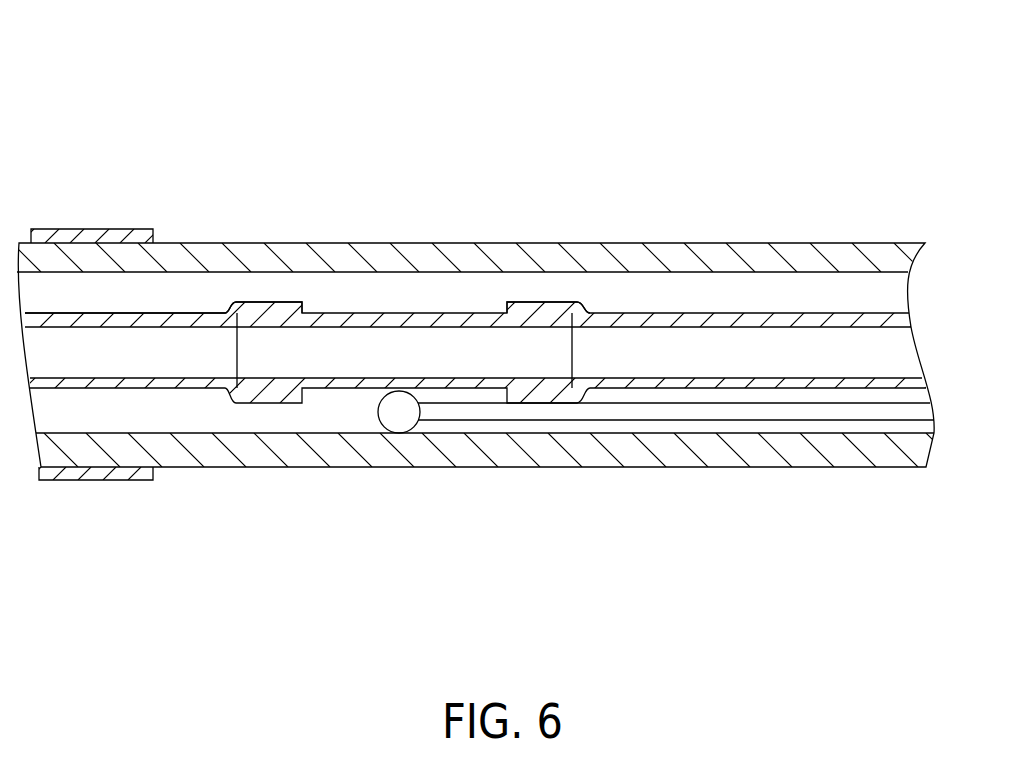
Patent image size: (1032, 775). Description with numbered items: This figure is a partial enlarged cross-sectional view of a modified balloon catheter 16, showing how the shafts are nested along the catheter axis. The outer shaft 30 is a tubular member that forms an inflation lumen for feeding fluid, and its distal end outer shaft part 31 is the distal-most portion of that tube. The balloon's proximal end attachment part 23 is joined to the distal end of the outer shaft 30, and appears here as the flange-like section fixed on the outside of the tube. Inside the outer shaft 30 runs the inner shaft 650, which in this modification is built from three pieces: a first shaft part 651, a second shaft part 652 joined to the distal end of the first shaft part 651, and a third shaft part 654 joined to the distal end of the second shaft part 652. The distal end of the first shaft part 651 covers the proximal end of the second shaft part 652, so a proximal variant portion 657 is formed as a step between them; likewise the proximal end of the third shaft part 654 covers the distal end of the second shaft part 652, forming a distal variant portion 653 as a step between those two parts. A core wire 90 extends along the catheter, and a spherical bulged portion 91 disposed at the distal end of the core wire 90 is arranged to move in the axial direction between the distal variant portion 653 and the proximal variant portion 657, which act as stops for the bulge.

The balloon catheter 16 is at (618, 115).
The proximal end attachment part 23 is at (115, 240).
The outer shaft 30 is at (837, 243).
The distal end outer shaft part 31 is at (853, 465).
The core wire 90 is at (692, 415).
The bulged portion 91 is at (399, 423).
The inner shaft 650 is at (703, 312).
The first shaft part 651 is at (775, 388).
The second shaft part 652 is at (340, 392).
The distal variant portion 653 is at (305, 300).
The third shaft part 654 is at (177, 312).
The proximal variant portion 657 is at (505, 312).